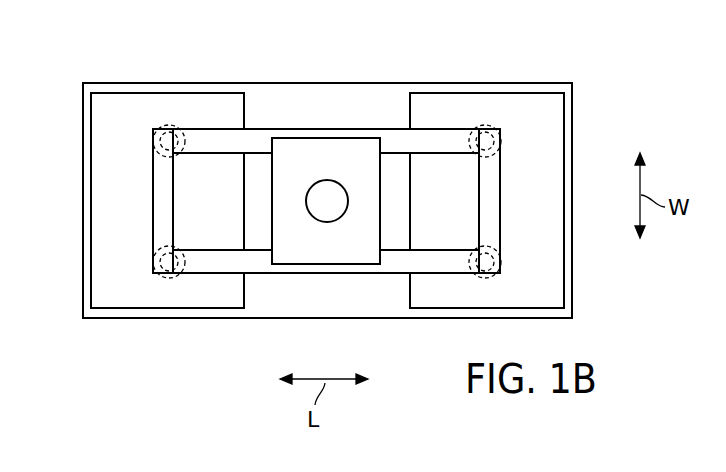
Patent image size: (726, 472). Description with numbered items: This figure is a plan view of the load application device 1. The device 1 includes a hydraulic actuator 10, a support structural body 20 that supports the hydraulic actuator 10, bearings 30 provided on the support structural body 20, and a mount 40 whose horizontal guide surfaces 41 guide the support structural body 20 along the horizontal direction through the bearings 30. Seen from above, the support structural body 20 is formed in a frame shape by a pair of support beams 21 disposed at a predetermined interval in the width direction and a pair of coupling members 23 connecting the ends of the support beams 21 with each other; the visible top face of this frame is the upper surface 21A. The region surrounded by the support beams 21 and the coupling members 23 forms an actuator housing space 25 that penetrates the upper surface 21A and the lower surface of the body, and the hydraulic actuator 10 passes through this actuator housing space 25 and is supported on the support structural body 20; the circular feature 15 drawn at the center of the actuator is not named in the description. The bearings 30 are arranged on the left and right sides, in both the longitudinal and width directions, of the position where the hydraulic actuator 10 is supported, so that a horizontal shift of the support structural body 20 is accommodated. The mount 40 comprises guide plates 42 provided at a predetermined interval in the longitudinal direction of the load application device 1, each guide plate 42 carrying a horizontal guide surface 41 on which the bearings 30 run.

The load application device 1 is at (383, 65).
The hydraulic actuator 10 is at (327, 180).
The hole 15 is at (327, 222).
The support structural body 20 is at (328, 204).
The support beam 21 is at (372, 128).
The upper surface 21A is at (222, 266).
The coupling member 23 is at (153, 202).
The actuator housing space 25 is at (407, 212).
The bearing 30 is at (153, 143).
The mount 40 is at (537, 82).
The horizontal guide surface 41 is at (231, 122).
The guide plate 42 is at (148, 89).